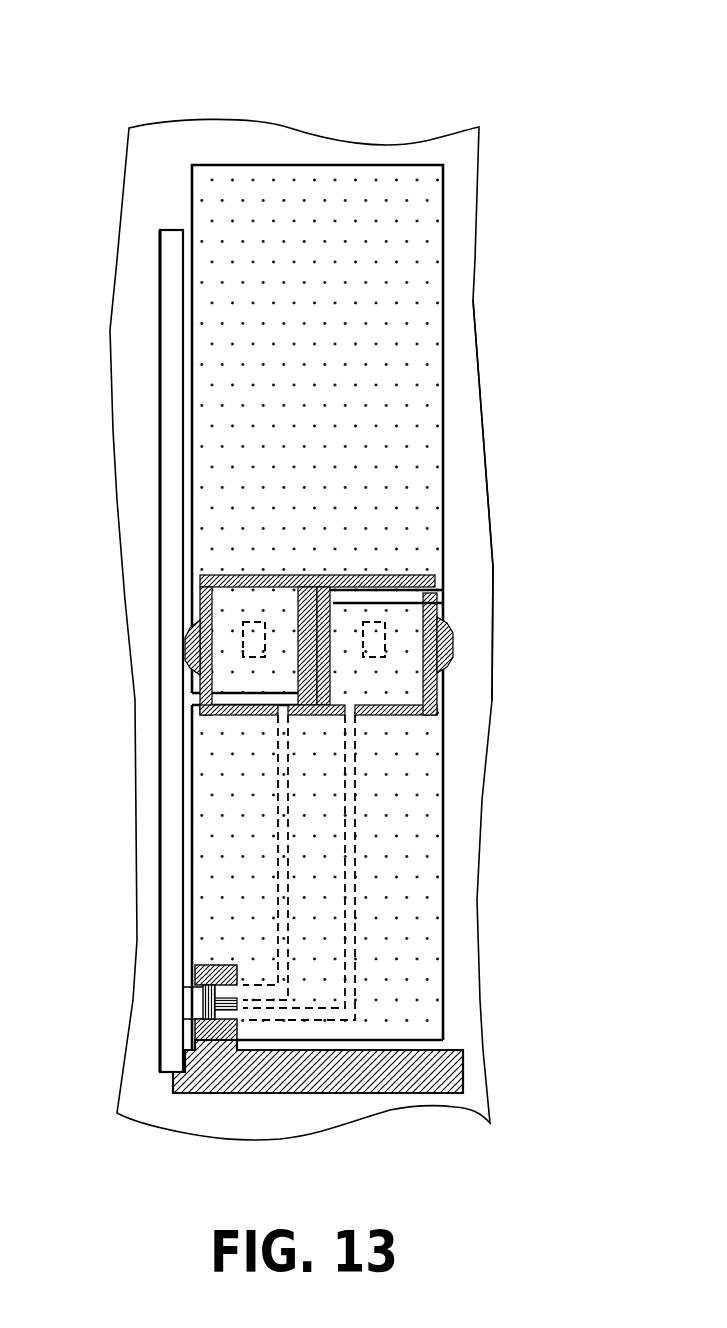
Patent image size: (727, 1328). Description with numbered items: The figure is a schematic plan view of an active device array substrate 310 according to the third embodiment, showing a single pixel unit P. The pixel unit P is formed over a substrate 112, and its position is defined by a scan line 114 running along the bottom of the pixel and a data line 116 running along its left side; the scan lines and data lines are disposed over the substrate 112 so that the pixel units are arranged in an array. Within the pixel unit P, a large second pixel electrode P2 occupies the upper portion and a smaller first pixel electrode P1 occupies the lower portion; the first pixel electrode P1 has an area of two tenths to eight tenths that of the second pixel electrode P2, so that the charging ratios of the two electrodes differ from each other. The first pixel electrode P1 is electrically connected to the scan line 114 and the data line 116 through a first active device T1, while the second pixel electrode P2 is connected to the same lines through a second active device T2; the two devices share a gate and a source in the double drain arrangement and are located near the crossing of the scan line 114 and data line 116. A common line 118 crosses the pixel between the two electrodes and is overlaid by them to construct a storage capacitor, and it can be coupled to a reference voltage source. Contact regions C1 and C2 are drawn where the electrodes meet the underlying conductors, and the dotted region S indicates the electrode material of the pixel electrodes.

The active device array substrate 310 is at (569, 1170).
The pixel unit P is at (344, 114).
The substrate 112 is at (472, 338).
The semiconductor layer S is at (407, 855).
The second pixel electrode P2 is at (222, 363).
The first pixel electrode P1 is at (443, 889).
The common line 118 is at (443, 645).
The second contact C2 is at (243, 637).
The first contact C1 is at (386, 637).
The second active device T2 is at (212, 968).
The first active device T1 is at (212, 1037).
The data line 116 is at (178, 1007).
The scan line 114 is at (207, 1088).